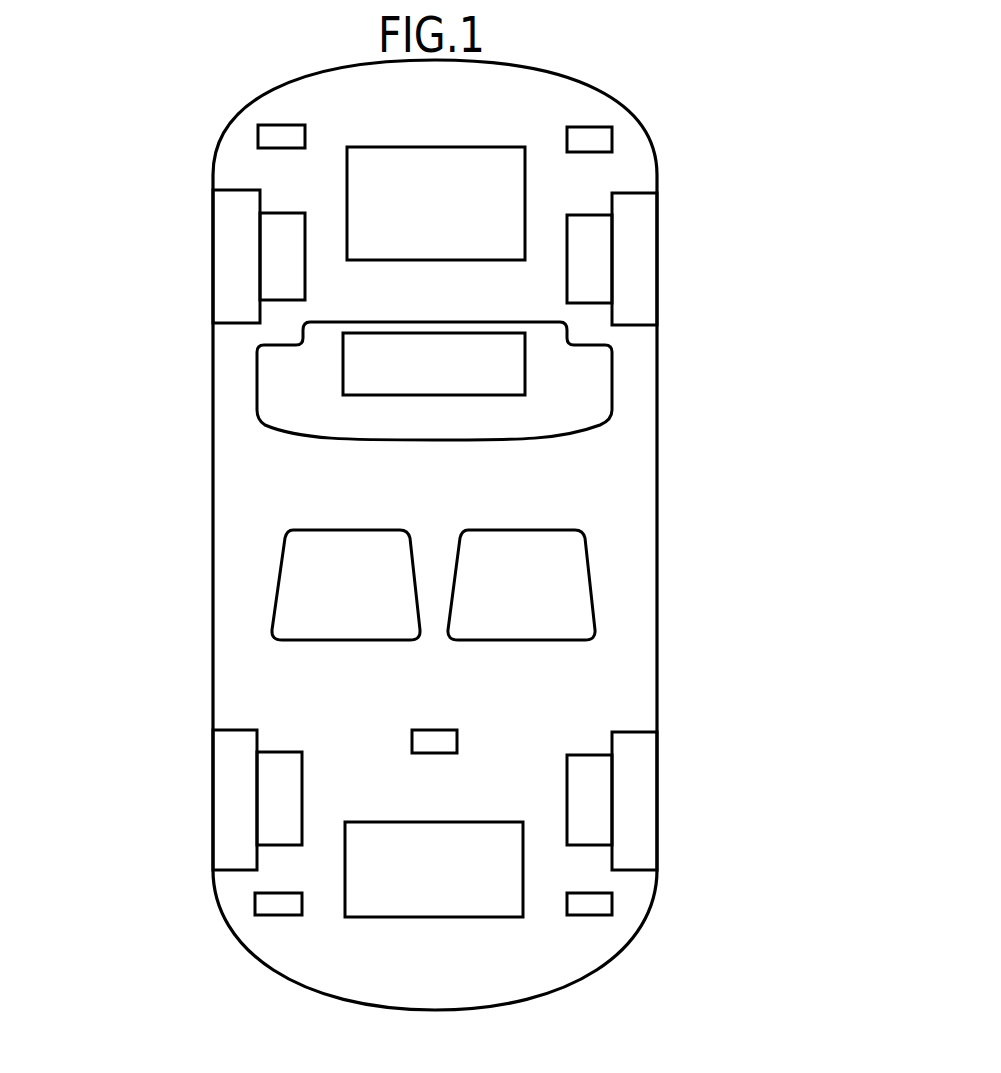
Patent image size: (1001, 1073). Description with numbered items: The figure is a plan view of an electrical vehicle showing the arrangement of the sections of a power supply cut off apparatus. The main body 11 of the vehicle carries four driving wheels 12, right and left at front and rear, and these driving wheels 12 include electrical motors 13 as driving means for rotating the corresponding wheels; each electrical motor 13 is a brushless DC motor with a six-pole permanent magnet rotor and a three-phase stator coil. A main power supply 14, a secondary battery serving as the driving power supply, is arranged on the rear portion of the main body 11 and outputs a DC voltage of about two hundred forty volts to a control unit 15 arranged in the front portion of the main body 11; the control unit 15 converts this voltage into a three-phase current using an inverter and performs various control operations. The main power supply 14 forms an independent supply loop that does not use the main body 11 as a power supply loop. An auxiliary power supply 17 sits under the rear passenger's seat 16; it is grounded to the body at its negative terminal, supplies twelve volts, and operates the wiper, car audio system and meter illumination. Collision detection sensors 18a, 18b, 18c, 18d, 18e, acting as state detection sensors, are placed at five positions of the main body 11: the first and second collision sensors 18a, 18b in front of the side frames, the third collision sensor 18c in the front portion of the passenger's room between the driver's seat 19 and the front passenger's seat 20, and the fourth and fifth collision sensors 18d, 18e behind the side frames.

The main body 11 is at (657, 398).
The driving wheels 12 is at (683, 797).
The electrical motors 13 is at (680, 690).
The main power supply 14 is at (482, 260).
The control unit 15 is at (428, 822).
The rear passenger's seat 16 is at (275, 425).
The auxiliary power supply 17 is at (525, 365).
The first collision sensor 18a is at (215, 972).
The second collision sensor 18b is at (575, 917).
The third collision sensor 18c is at (460, 668).
The fourth collision sensor 18d is at (305, 136).
The fifth collision sensor 18e is at (567, 138).
The driver's seat 19 is at (317, 643).
The front passenger's seat 20 is at (563, 643).